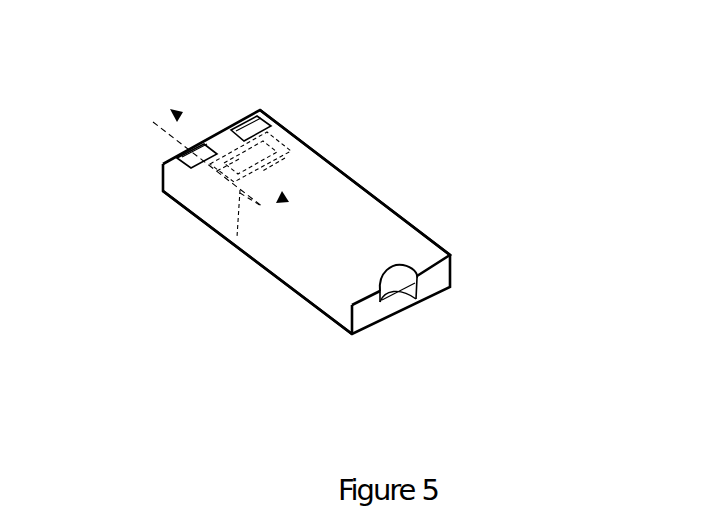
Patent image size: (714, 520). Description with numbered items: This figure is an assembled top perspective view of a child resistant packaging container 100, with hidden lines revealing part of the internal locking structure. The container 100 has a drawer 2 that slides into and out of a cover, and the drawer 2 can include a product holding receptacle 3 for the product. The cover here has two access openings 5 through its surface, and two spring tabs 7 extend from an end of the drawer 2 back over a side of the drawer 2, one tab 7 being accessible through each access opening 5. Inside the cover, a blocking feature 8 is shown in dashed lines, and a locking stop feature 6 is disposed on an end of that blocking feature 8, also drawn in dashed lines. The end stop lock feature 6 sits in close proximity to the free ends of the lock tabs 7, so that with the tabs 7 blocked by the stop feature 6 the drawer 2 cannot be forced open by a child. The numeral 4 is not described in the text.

The child resistant packaging container 100 is at (116, 167).
The drawer 2 is at (287, 270).
The product holding receptacle 3 is at (403, 276).
The notch wall 4 is at (406, 280).
The access opening 5 is at (198, 142).
The locking stop feature 6 is at (237, 237).
The spring tab 7 is at (282, 148).
The blocking feature 8 is at (353, 220).